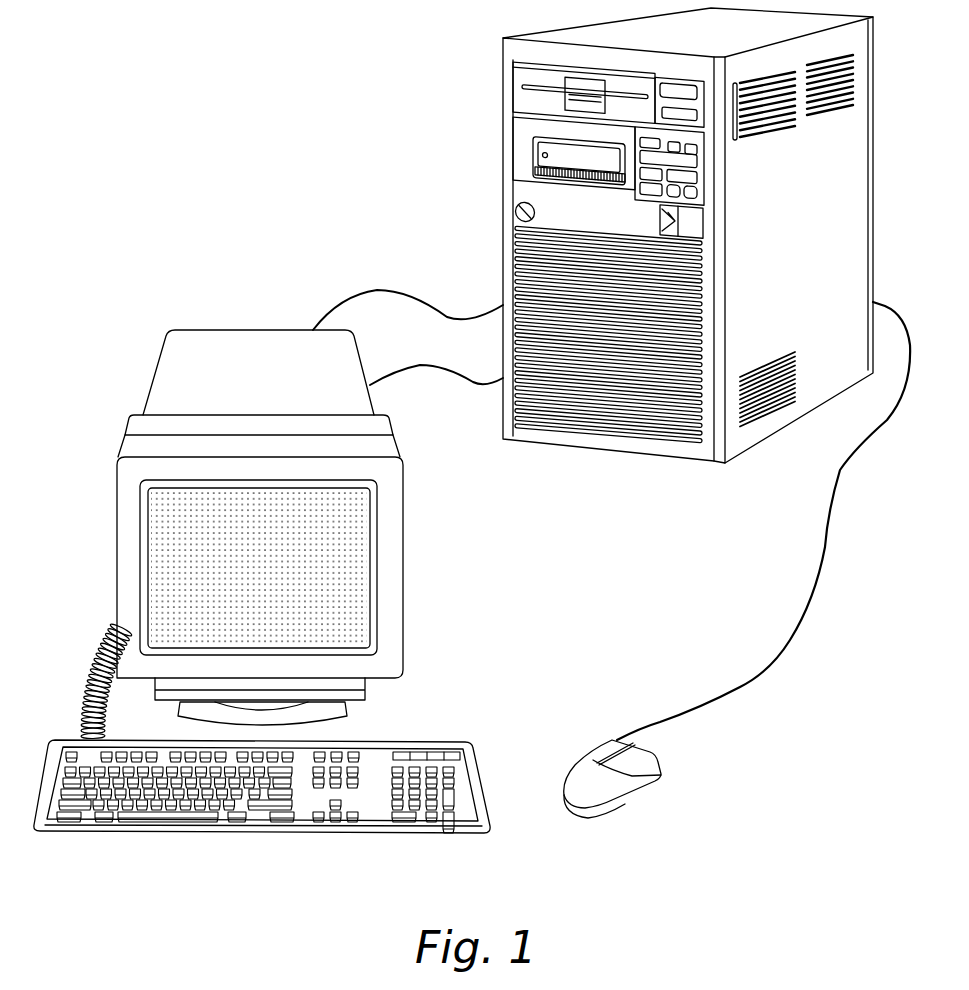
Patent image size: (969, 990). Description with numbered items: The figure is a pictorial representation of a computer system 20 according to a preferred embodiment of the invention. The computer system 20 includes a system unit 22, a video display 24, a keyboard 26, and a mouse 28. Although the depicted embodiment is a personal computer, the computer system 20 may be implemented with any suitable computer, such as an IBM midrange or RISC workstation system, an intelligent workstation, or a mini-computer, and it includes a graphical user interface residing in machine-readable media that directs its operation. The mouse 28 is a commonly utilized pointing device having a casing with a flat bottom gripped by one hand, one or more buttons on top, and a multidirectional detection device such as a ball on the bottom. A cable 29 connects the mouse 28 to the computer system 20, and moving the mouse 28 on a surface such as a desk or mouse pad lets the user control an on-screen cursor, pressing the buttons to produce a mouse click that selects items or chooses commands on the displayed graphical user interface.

The computer system 20 is at (292, 204).
The system unit 22 is at (518, 193).
The video display 24 is at (272, 350).
The keyboard 26 is at (293, 828).
The mouse 28 is at (618, 800).
The cable 29 is at (745, 687).